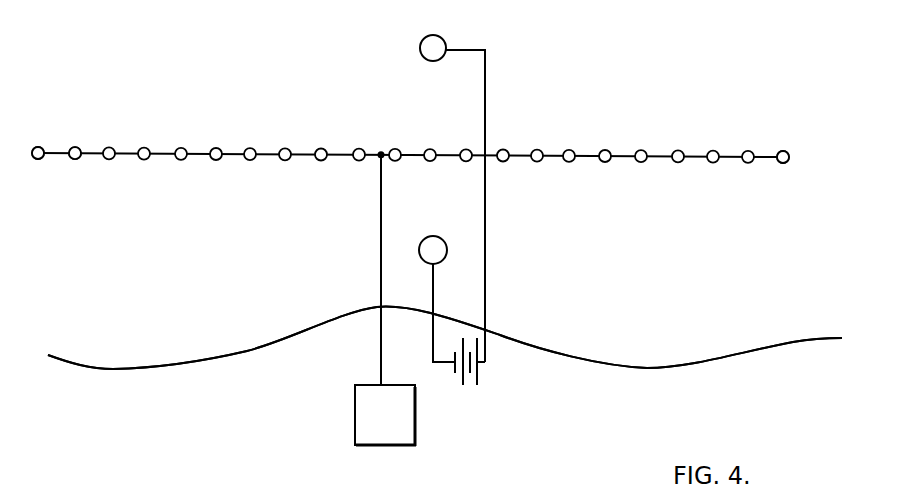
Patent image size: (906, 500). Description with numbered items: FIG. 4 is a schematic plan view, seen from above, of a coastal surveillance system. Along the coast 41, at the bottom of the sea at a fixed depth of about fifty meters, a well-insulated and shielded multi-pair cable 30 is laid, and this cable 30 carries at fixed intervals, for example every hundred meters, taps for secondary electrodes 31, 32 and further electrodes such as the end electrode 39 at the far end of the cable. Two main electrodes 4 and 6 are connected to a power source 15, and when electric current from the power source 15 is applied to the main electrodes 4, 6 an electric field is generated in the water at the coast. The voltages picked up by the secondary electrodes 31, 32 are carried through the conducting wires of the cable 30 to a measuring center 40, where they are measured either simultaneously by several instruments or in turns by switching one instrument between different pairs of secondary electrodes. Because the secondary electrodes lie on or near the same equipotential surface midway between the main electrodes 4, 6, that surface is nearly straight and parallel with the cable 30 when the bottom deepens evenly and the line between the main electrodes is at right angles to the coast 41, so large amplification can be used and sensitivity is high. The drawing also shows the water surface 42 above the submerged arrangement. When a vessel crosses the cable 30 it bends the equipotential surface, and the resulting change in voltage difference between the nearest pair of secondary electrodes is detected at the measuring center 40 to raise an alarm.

The main electrode 4 is at (423, 41).
The main electrode 6 is at (470, 222).
The power source 15 is at (478, 376).
The multi-pair cable 30 is at (130, 153).
The secondary electrode 31 is at (38, 147).
The secondary electrode 32 is at (75, 147).
The last sensor 39 is at (783, 151).
The measuring center 40 is at (355, 428).
The coast 41 is at (78, 417).
The air/water surface 42 is at (78, 315).